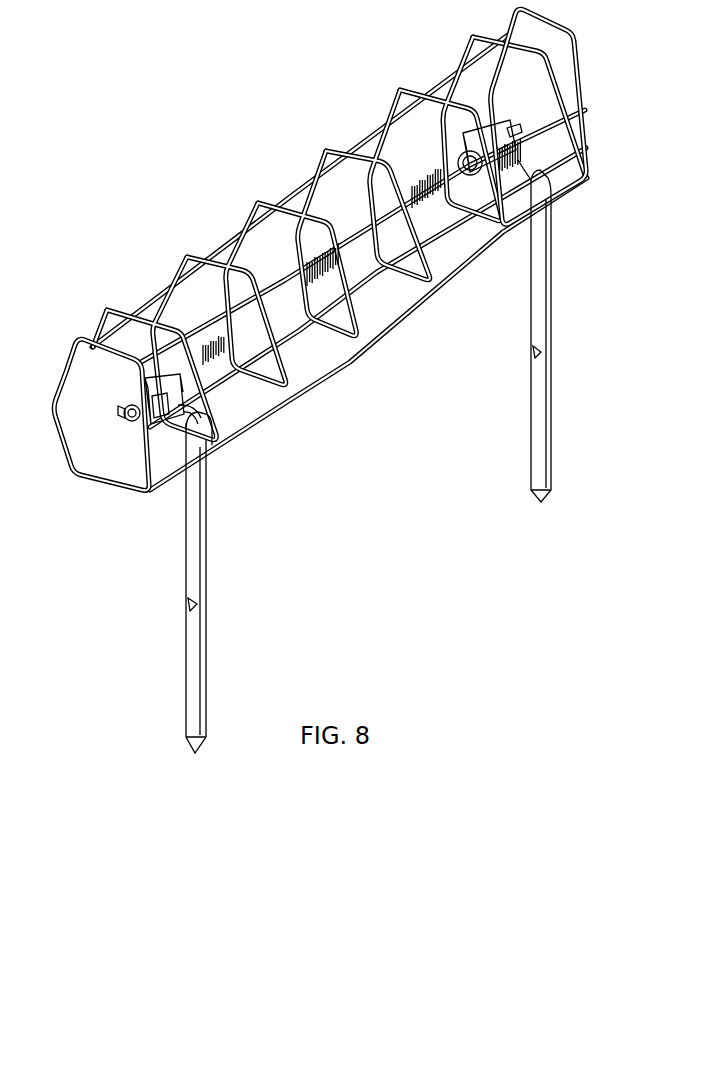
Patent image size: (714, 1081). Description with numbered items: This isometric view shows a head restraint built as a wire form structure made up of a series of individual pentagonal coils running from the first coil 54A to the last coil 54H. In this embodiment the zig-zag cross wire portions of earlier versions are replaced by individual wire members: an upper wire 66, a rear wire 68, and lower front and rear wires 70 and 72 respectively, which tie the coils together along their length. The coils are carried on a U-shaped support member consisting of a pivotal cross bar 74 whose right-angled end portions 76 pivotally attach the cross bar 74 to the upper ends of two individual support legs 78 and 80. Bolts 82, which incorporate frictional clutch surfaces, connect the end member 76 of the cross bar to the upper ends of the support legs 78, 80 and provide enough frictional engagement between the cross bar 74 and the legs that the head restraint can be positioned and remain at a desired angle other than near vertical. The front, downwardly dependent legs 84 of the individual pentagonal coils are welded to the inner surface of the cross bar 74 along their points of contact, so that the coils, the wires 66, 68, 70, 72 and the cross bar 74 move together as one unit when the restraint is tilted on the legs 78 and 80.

The coil 54A is at (68, 358).
The coil 54H is at (581, 58).
The upper wire 66 is at (298, 193).
The rear wire 68 is at (377, 274).
The lower front wire 70 is at (103, 469).
The lower rear wire 72 is at (173, 484).
The pivotal cross bar 74 is at (285, 279).
The right-angled end portion 76 is at (455, 158).
The support leg 78 is at (210, 565).
The support leg 80 is at (530, 426).
The bolt 82 is at (128, 410).
The front downwardly dependent leg 84 is at (373, 226).